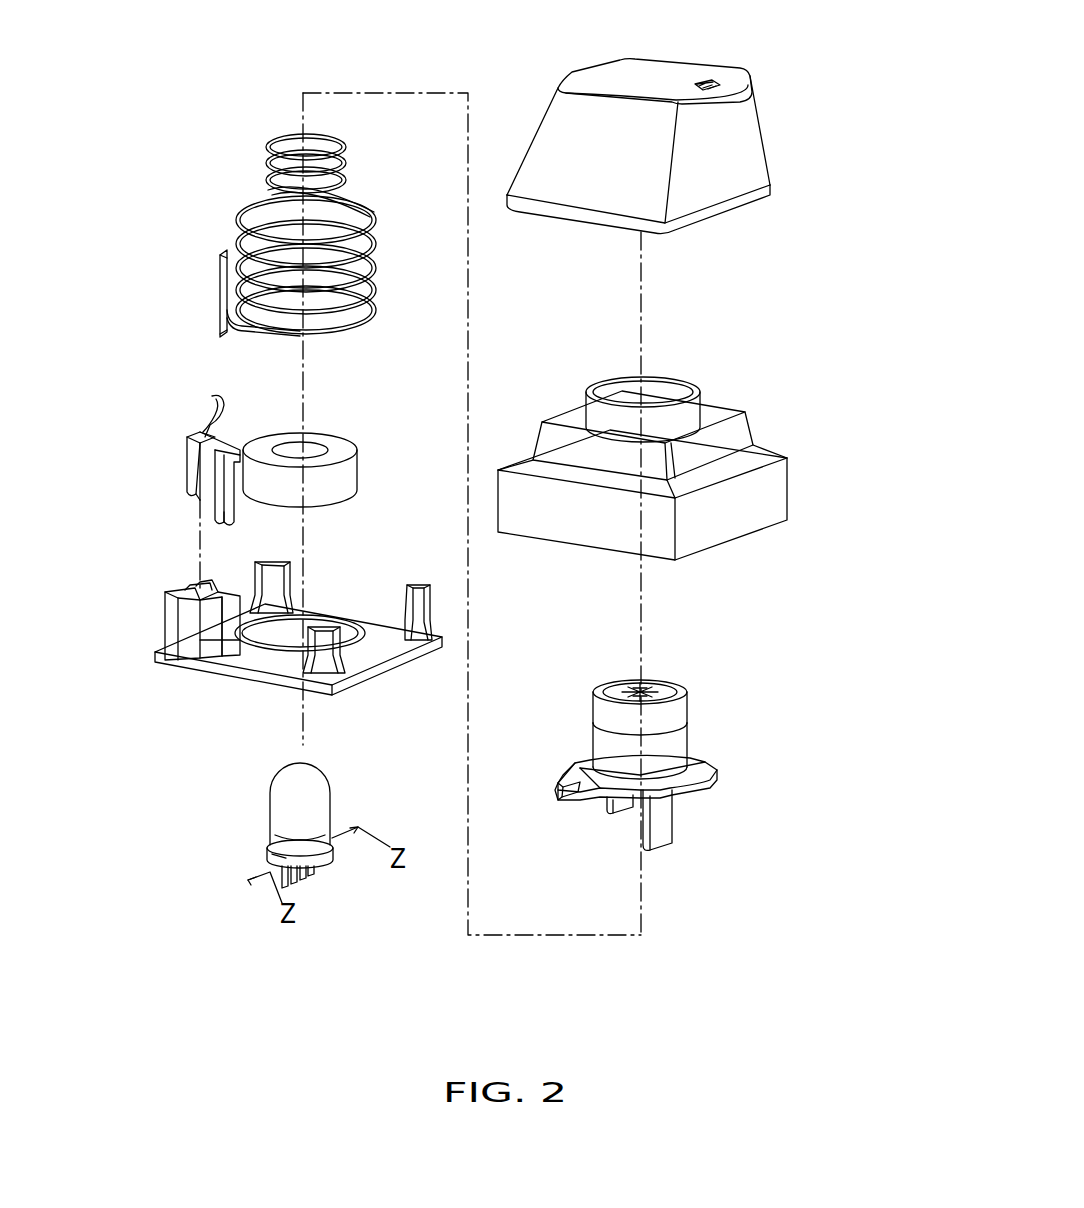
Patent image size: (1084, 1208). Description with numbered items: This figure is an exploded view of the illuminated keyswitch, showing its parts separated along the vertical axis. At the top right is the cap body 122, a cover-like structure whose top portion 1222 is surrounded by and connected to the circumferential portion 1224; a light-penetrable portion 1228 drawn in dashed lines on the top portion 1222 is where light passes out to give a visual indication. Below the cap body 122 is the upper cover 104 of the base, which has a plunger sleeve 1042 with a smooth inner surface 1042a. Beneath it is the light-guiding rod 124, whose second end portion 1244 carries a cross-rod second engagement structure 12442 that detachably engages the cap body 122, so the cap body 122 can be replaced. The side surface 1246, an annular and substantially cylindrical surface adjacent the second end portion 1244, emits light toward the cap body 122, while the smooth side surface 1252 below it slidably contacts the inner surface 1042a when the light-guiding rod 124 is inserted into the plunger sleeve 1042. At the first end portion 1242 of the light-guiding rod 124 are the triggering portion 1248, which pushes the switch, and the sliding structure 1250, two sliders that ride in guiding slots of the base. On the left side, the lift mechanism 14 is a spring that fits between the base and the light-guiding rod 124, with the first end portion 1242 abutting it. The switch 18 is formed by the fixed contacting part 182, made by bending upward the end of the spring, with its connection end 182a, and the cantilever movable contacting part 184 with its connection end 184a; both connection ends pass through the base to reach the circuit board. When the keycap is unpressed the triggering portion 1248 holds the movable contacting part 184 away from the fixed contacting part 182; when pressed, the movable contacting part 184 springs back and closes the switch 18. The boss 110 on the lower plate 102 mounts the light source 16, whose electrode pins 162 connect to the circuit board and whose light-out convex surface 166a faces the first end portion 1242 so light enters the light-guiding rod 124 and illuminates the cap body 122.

The lift mechanism 14 is at (370, 205).
The light source 16 is at (268, 838).
The switch 18 is at (138, 280).
The lower plate 102 is at (343, 603).
The upper cover 104 is at (706, 446).
The boss 110 is at (340, 470).
The cap body 122 is at (698, 137).
The light-guiding rod 124 is at (703, 762).
The electrode pins 162 is at (317, 877).
The light-out convex surface 166a is at (283, 783).
The fixed contacting part 182 is at (220, 288).
The connection end of fixed contacting part 182a is at (223, 337).
The movable contacting part 184 is at (213, 413).
The connection end of movable contacting part 184a is at (228, 522).
The plunger sleeve 1042 is at (693, 410).
The inner surface of plunger sleeve 1042a is at (663, 392).
The top portion 1222 is at (653, 70).
The circumferential portion 1224 is at (752, 143).
The light-penetrable portion 1228 is at (710, 80).
The first end portion 1242 is at (600, 788).
The second end portion 1244 is at (690, 665).
The side surface 1246 is at (678, 710).
The triggering portion 1248 is at (562, 777).
The sliding structure 1250 is at (665, 822).
The smooth side surface 1252 is at (678, 742).
The second engagement structure 12442 is at (650, 680).